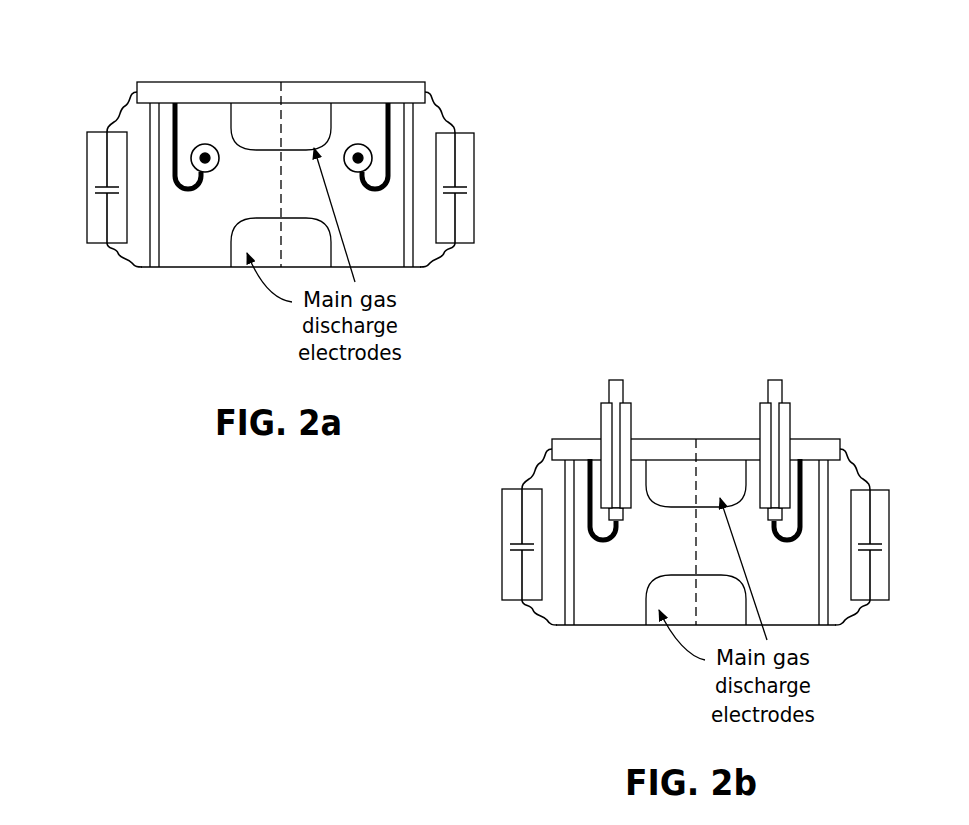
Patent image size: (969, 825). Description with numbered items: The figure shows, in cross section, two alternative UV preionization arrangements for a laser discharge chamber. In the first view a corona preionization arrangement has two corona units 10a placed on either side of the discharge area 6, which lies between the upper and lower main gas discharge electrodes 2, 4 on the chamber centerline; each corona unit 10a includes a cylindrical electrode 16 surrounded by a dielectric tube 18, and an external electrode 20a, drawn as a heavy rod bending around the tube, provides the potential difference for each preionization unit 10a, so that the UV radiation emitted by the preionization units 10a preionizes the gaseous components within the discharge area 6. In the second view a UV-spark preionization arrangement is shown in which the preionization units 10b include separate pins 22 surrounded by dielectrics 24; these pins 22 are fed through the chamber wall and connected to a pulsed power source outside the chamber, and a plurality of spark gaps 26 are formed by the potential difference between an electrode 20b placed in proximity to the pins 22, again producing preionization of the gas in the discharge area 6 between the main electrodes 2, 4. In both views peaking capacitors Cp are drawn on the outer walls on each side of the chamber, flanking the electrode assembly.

In FIG. 2A, the main gas discharge electrode 2 is at (275, 140).
In FIG. 2B, the main gas discharge electrode 2 is at (696, 483).
In FIG. 2A, the main gas discharge electrode 4 is at (275, 258).
In FIG. 2B, the main gas discharge electrode 4 is at (696, 600).
In FIG. 2A, the discharge area 6 is at (300, 194).
In FIG. 2B, the discharge area 6 is at (705, 532).
In FIG. 2A, the corona unit 10a is at (280, 133).
In FIG. 2B, the preionization unit 10b is at (680, 418).
In FIG. 2A, the cylindrical electrode 16 is at (351, 141).
In FIG. 2A, the dielectric tube 18 is at (219, 167).
In FIG. 2A, the external electrode 20a is at (190, 194).
In FIG. 2B, the electrode 20b is at (600, 560).
In FIG. 2B, the pin 22 is at (616, 379).
In FIG. 2B, the dielectric 24 is at (602, 400).
In FIG. 2B, the spark gap 26 is at (624, 525).
In FIG. 2A, the peaking capacitors Cp is at (74, 239).
In FIG. 2B, the peaking capacitors Cp is at (691, 607).